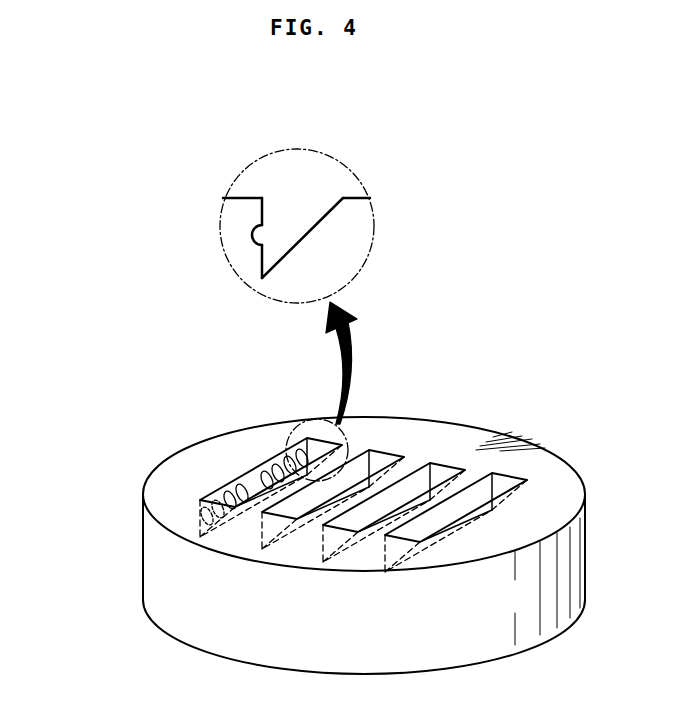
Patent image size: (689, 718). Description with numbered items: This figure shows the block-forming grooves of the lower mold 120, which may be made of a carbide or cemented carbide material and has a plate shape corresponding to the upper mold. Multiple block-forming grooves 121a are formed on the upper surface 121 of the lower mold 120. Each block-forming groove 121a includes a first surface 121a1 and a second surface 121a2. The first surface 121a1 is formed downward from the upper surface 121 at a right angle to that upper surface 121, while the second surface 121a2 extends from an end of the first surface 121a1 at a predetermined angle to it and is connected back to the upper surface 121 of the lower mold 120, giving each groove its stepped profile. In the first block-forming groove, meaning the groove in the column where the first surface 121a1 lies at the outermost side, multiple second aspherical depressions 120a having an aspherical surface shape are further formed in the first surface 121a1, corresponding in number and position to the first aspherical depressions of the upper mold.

The lower mold 120 is at (505, 430).
The second aspherical depressions 120a is at (254, 238).
The upper surface 121 is at (242, 196).
The block-forming grooves 121a is at (300, 215).
The first surface 121a1 is at (260, 261).
The second surface 121a2 is at (305, 234).